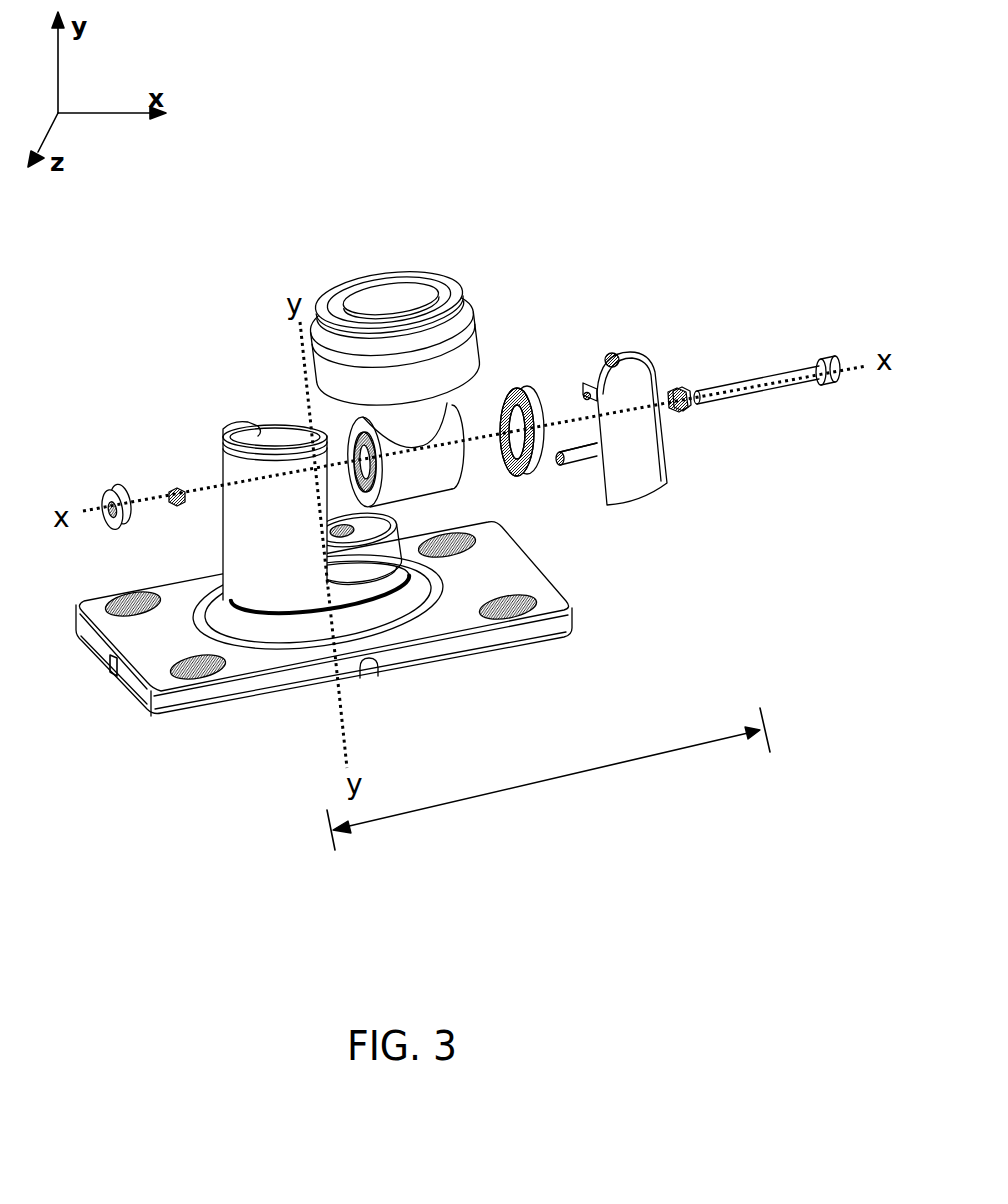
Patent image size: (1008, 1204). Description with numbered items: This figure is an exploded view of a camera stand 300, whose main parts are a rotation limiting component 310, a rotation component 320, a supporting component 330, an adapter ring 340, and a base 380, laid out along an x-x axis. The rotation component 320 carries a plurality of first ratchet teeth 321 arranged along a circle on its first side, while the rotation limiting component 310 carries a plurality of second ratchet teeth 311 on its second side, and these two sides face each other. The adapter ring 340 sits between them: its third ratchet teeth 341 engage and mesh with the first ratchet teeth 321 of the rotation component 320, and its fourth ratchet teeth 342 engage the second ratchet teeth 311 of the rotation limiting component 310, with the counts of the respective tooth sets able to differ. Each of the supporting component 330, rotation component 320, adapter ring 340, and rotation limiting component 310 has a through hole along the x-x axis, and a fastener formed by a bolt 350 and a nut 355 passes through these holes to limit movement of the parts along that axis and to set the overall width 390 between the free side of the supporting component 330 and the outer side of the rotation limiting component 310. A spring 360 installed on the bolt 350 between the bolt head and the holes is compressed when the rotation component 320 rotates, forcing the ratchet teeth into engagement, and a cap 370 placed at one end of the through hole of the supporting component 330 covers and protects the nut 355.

The camera stand 300 is at (253, 50).
The rotation limiting component 310 is at (630, 377).
The second ratchet teeth 311 is at (617, 422).
The rotation component 320 is at (332, 300).
The first ratchet teeth 321 is at (462, 478).
The supporting component 330 is at (243, 460).
The adapter ring 340 is at (518, 388).
The third ratchet teeth 341 is at (593, 418).
The fourth ratchet teeth 342 is at (537, 420).
The bolt 350 is at (750, 387).
The nut 355 is at (173, 488).
The spring 360 is at (674, 390).
The cap 370 is at (108, 487).
The base 380 is at (508, 584).
The overall width 390 is at (548, 779).